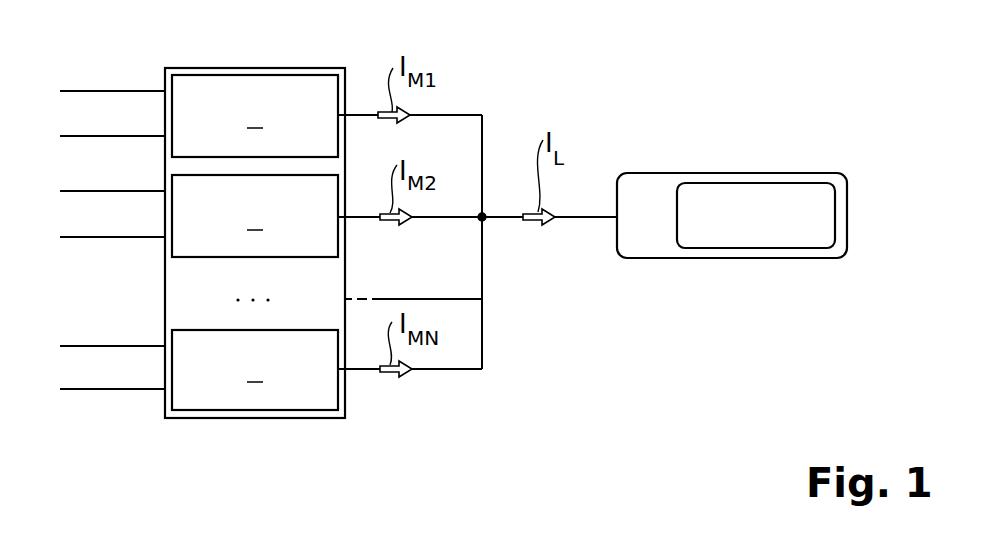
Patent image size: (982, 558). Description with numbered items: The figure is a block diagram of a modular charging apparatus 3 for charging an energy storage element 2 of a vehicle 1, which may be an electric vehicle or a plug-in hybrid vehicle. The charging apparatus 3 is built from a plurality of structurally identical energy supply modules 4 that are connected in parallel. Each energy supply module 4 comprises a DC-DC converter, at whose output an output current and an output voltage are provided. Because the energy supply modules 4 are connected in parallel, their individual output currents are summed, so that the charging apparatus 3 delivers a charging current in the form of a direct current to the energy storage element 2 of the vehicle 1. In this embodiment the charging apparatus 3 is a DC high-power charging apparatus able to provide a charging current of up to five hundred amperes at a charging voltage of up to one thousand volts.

The vehicle 1 is at (647, 200).
The energy storage element 2 is at (753, 198).
The charging apparatus 3 is at (163, 62).
The energy supply module 4 is at (255, 242).